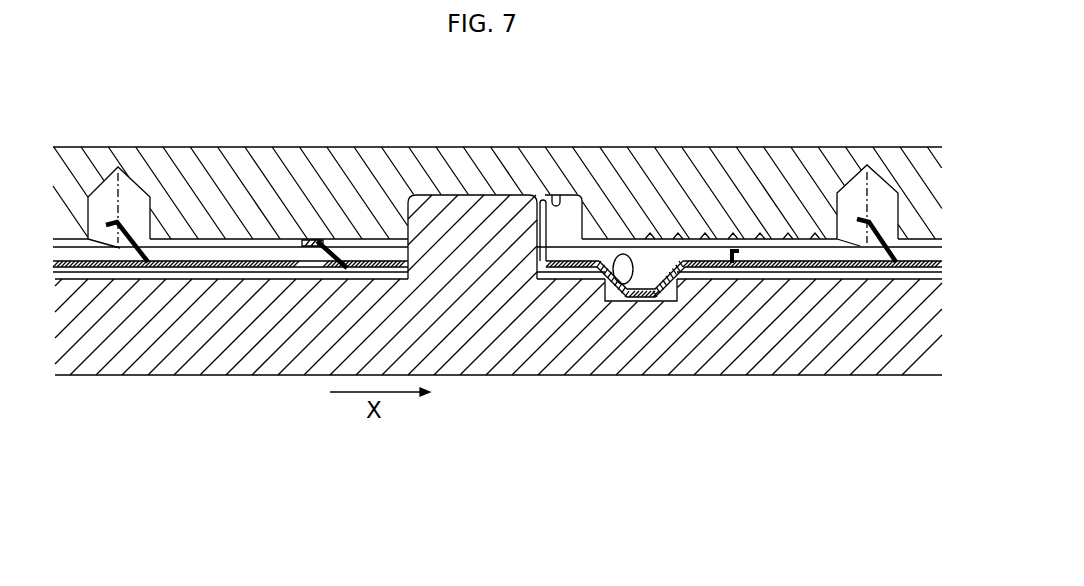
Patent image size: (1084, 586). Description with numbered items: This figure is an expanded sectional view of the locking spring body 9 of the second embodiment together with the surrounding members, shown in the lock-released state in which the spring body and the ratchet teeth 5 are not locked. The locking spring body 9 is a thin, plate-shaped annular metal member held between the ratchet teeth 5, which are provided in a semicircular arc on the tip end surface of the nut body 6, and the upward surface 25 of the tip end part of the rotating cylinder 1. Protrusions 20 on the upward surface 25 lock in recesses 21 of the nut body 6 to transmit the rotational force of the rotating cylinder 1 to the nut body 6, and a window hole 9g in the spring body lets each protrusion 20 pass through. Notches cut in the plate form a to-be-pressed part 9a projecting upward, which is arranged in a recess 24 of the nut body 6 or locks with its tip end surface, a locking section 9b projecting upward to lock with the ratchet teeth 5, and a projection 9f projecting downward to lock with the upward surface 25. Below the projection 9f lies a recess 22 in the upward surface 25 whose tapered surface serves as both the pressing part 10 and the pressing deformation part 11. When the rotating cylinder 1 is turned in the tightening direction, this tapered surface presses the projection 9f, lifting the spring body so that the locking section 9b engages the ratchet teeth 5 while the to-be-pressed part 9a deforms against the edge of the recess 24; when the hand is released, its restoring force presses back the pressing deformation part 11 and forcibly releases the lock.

The rotating cylinder 1 is at (512, 364).
The ratchet teeth 5 is at (667, 238).
The nut body 6 is at (610, 153).
The locking spring body 9 is at (242, 261).
The to-be-pressed part 9a is at (129, 217).
The locking section 9b is at (745, 245).
The projection 9f is at (645, 306).
The window hole 9g is at (544, 258).
The pressing part 10 is at (579, 348).
The pressing deformation part 11 is at (612, 286).
The protrusion 20 is at (445, 190).
The recess 21 is at (552, 195).
The recess 22 is at (672, 292).
The recess 24 is at (105, 197).
The upward surface 25 is at (224, 281).